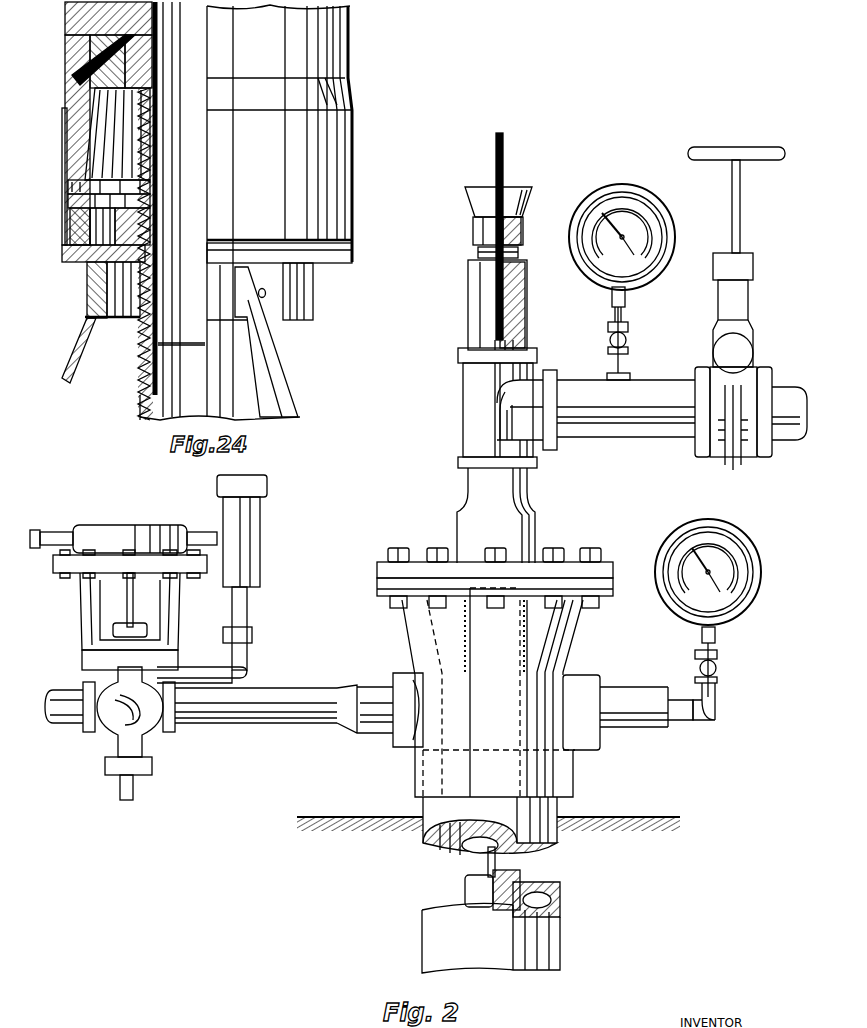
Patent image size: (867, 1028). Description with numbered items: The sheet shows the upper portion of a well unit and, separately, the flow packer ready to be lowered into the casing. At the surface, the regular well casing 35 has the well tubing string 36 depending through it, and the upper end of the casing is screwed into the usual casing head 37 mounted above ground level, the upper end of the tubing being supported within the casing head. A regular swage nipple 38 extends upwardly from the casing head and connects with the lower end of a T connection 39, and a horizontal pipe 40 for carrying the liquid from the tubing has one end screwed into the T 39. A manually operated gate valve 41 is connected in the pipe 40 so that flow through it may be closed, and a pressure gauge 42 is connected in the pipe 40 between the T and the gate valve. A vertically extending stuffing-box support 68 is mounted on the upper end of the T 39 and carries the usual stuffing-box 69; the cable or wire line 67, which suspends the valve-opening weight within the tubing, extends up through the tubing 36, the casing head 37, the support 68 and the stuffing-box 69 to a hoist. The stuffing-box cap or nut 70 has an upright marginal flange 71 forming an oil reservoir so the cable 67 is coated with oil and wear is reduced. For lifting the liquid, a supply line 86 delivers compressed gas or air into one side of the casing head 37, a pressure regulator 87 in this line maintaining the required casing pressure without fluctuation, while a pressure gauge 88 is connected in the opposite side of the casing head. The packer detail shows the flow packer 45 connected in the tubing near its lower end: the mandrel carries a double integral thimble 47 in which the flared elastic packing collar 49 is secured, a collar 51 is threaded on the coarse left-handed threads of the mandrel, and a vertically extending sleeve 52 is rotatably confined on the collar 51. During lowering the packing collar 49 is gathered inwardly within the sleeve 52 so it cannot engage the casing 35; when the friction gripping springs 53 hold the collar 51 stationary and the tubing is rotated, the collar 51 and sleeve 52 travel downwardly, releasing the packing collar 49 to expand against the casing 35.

In FIG. 2, the well casing 35 is at (555, 897).
In FIG. 24, the well tubing string 36 is at (140, 425).
In FIG. 2, the well tubing string 36 is at (520, 873).
In FIG. 2, the casing head 37 is at (440, 777).
In FIG. 2, the swage nipple 38 is at (475, 512).
In FIG. 2, the T connection 39 is at (477, 428).
In FIG. 2, the horizontal pipe 40 is at (663, 396).
In FIG. 2, the gate valve 41 is at (758, 336).
In FIG. 2, the pressure gauge 42 is at (628, 192).
In FIG. 24, the flow packer 45 is at (352, 232).
In FIG. 24, the double integral thimble 47 is at (335, 53).
In FIG. 24, the packing collar 49 is at (345, 103).
In FIG. 24, the collar 51 is at (70, 262).
In FIG. 24, the sleeve 52 is at (340, 172).
In FIG. 24, the friction gripping springs 53 is at (80, 332).
In FIG. 2, the cable or wire line 67 is at (510, 140).
In FIG. 2, the stuffing-box support 68 is at (480, 302).
In FIG. 2, the stuffing-box 69 is at (515, 254).
In FIG. 2, the stuffing-box cap or nut 70 is at (525, 212).
In FIG. 2, the marginal flange 71 is at (517, 196).
In FIG. 2, the supply line 86 is at (305, 703).
In FIG. 2, the pressure regulator 87 is at (120, 535).
In FIG. 2, the pressure gauge 88 is at (672, 542).